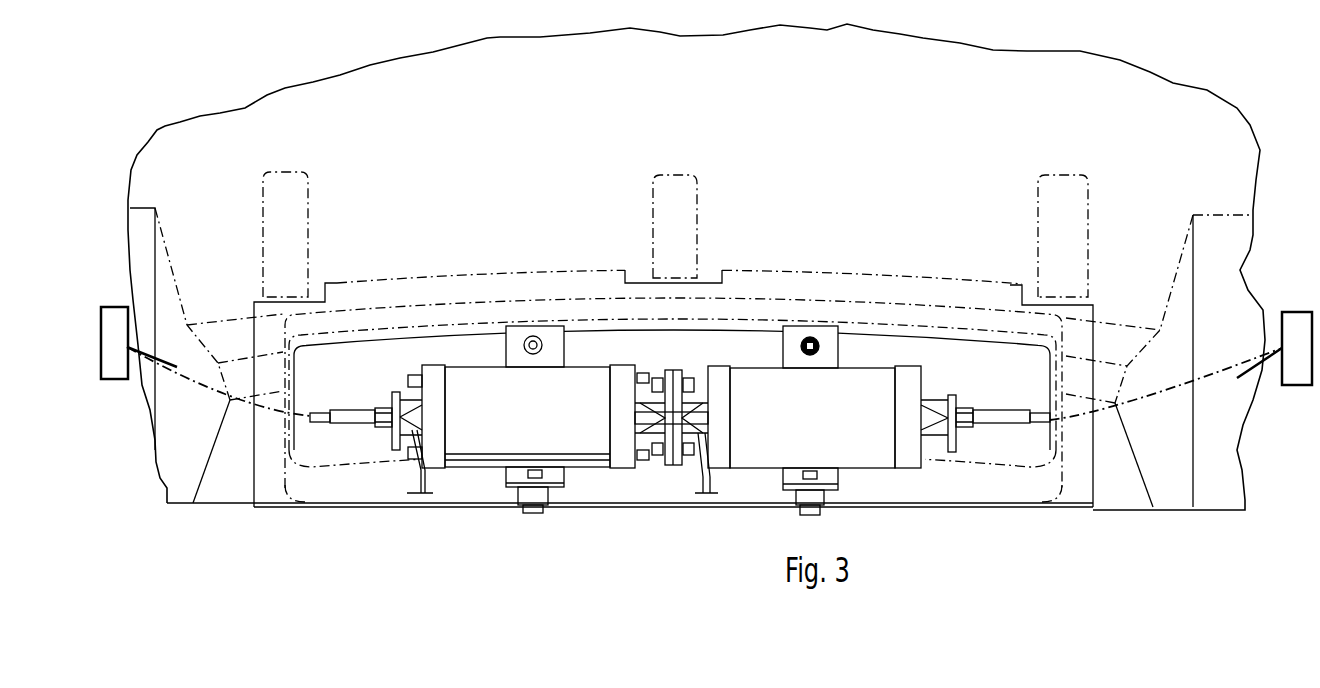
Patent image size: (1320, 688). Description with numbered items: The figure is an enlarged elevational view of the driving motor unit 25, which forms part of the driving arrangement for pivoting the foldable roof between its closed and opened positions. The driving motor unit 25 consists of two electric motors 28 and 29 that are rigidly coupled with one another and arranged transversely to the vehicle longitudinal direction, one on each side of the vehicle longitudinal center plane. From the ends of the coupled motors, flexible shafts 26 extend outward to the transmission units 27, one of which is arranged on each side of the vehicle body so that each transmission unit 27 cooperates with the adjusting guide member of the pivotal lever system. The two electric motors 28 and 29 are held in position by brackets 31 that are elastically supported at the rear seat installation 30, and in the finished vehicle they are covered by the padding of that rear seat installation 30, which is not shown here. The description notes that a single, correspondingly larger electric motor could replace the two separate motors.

The driving motor unit 25 is at (681, 553).
The flexible shafts 26 is at (340, 415).
The transmission units 27 is at (118, 297).
The electric motor 28 is at (458, 373).
The electric motor 29 is at (747, 385).
The rear seat installation 30 is at (814, 68).
The brackets 31 is at (520, 335).